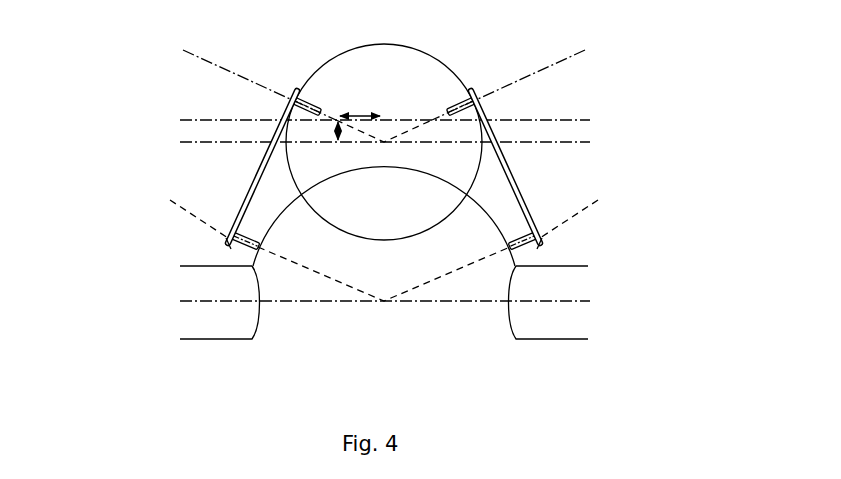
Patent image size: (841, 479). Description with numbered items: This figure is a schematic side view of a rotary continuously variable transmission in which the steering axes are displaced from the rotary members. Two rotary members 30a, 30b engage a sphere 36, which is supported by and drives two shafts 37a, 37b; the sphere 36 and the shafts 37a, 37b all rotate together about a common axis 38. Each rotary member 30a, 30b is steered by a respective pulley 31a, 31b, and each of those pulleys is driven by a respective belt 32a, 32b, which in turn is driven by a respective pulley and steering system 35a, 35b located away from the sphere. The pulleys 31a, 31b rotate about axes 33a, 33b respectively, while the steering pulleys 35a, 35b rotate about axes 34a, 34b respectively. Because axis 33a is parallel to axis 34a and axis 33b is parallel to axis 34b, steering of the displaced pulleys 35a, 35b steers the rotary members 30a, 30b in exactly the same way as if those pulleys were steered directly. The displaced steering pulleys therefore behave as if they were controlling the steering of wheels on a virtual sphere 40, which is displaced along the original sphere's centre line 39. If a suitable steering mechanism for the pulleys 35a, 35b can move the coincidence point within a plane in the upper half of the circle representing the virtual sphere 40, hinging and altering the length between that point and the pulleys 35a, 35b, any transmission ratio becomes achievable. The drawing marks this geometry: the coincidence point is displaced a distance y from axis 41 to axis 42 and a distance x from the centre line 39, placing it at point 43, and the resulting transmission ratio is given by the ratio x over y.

The rotary member 30a is at (250, 233).
The rotary member 30b is at (520, 233).
The pulley 31a is at (223, 235).
The pulley 31b is at (548, 232).
The belt 32a is at (245, 183).
The belt 32b is at (523, 173).
The axis 33a is at (173, 203).
The axis 33b is at (595, 202).
The axis 34a is at (217, 72).
The axis 34b is at (557, 70).
The pulley and steering system 35a is at (288, 93).
The pulley and steering system 35b is at (488, 103).
The sphere 36 is at (518, 352).
The shaft 37a is at (203, 260).
The shaft 37b is at (568, 260).
The axis 38 is at (317, 304).
The centre line 39 is at (386, 341).
The virtual sphere 40 is at (462, 67).
The axis 41 is at (193, 139).
The axis 42 is at (255, 119).
The point 43 is at (333, 113).